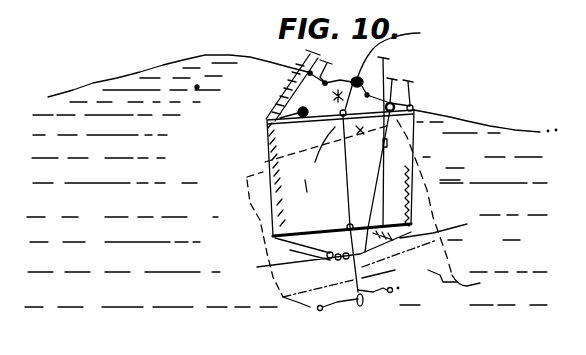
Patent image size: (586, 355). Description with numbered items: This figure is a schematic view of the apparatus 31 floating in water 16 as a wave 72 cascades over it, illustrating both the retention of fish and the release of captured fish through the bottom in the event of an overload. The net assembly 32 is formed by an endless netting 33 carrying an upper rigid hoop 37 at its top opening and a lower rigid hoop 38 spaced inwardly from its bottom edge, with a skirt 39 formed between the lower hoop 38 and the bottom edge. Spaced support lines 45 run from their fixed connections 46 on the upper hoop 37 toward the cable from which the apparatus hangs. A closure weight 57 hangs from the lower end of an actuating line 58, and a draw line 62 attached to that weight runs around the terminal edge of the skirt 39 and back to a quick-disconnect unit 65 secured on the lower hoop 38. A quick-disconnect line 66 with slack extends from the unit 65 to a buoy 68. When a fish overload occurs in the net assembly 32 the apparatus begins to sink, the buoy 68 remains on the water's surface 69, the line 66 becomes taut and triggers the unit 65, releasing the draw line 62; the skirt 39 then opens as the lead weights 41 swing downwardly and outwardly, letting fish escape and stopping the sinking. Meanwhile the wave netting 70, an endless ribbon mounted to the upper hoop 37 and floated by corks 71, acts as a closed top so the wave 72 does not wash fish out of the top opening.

The water 16 is at (455, 157).
The apparatus 31 is at (223, 163).
The net assembly 32 is at (268, 200).
The netting 33 is at (400, 212).
The upper rigid hoop 37 is at (268, 135).
The lower rigid hoop 38 is at (273, 237).
The skirt 39 is at (449, 228).
The lead weights 41 is at (368, 270).
The support lines 45 is at (410, 106).
The fixed connections 46 is at (415, 108).
The closure weight 57 is at (365, 302).
The actuating line 58 is at (393, 184).
The draw line 62 is at (345, 226).
The quick-disconnect unit 65 is at (372, 203).
The quick-disconnect line 66 is at (327, 158).
The buoy 68 is at (398, 63).
The water's surface 69 is at (467, 121).
The wave netting 70 is at (295, 73).
The corks 71 is at (356, 77).
The wave 72 is at (197, 86).